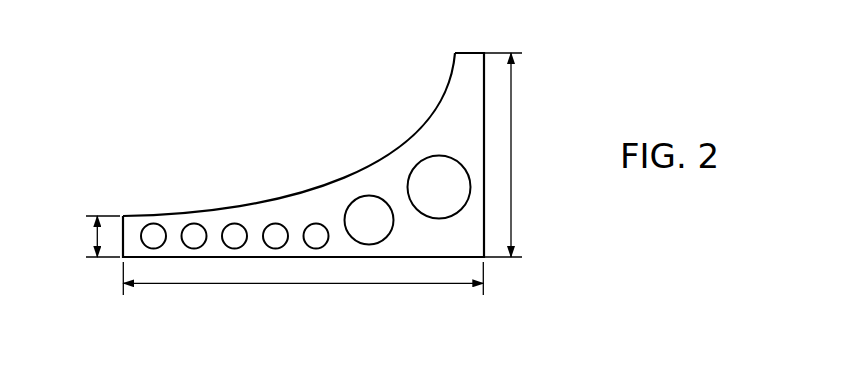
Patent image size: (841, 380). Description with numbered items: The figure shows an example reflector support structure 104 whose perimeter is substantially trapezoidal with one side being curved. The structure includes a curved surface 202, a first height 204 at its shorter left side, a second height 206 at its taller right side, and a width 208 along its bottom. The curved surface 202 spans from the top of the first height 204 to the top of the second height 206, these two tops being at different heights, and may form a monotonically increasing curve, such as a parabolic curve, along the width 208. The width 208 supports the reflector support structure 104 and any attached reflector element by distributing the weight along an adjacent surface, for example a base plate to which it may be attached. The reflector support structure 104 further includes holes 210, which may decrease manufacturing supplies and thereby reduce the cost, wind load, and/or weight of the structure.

The reflector support structure 104 is at (231, 207).
The curved surface 202 is at (363, 170).
The first height 204 is at (92, 238).
The second height 206 is at (512, 155).
The width 208 is at (303, 284).
The holes 210 is at (413, 172).